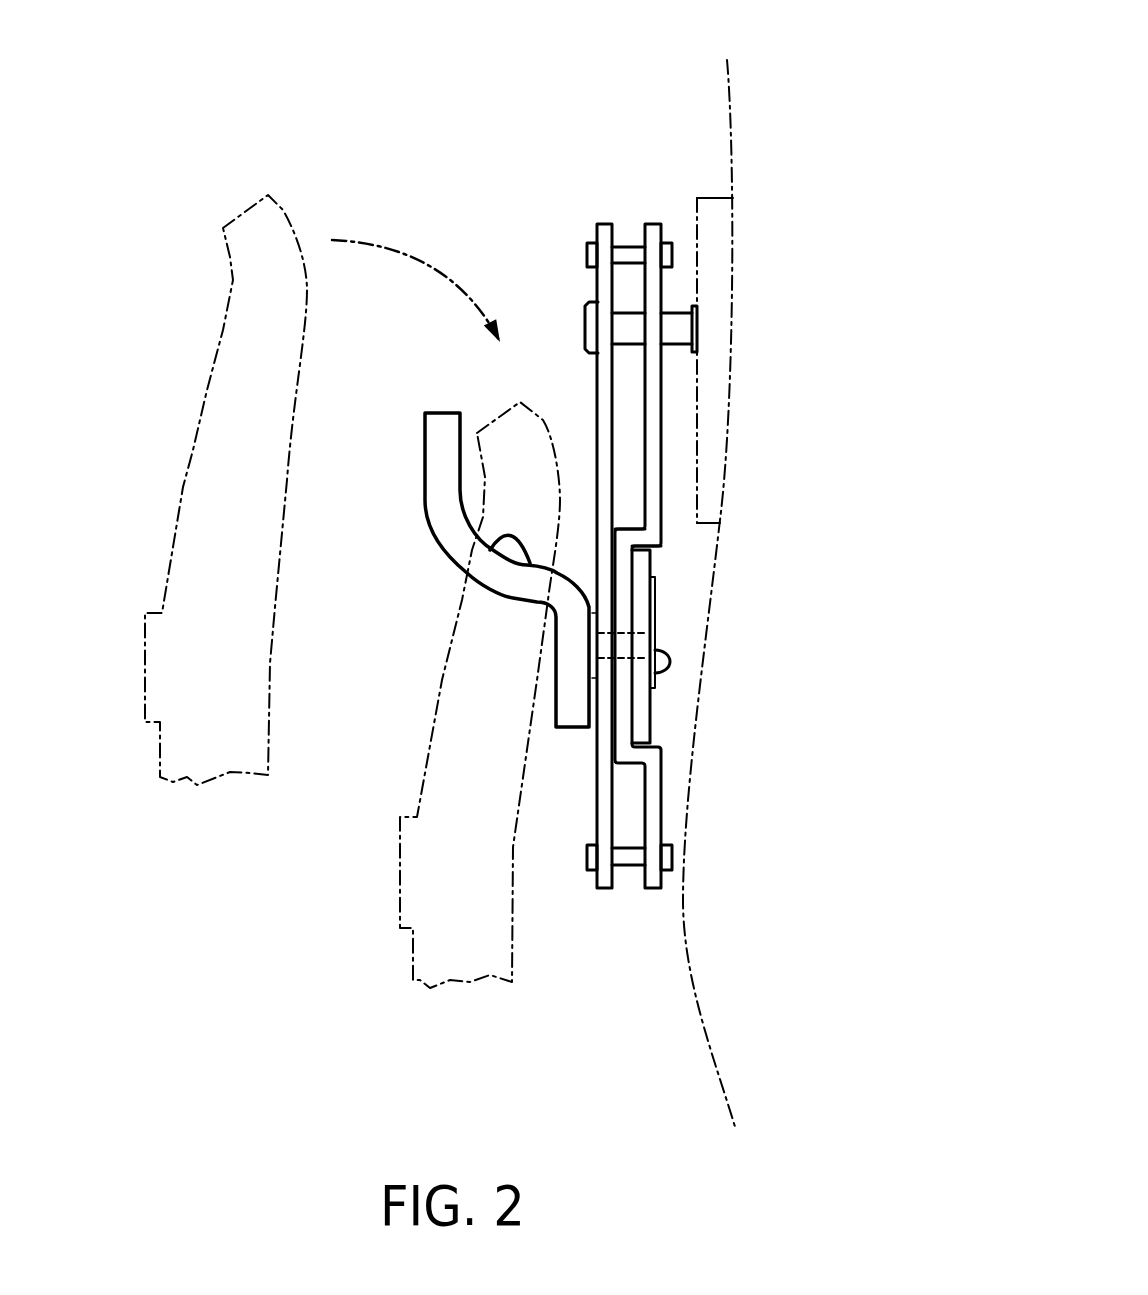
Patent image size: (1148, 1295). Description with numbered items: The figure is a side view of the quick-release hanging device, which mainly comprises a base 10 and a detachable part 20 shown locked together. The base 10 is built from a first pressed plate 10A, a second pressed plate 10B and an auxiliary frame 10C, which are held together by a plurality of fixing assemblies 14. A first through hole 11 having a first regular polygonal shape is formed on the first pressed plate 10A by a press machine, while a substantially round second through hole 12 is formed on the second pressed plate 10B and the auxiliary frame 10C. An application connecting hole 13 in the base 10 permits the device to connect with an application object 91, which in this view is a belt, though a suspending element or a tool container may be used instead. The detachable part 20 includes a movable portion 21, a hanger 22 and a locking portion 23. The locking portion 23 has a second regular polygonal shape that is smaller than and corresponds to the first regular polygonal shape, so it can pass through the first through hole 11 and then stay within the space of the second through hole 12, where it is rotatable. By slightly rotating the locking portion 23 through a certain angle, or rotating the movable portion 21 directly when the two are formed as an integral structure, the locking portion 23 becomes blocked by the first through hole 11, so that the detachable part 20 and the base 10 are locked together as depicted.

The base 10 is at (681, 502).
The first pressed plate 10A is at (607, 232).
The second pressed plate 10B is at (623, 530).
The auxiliary frame 10C is at (642, 703).
The first through hole 11 is at (610, 633).
The second through hole 12 is at (620, 633).
The application connecting hole 13 is at (606, 313).
The fixing assemblies 14 is at (628, 247).
The detachable part 20 is at (454, 690).
The movable portion 21 is at (567, 697).
The hanger 22 is at (557, 703).
The locking portion 23 is at (668, 668).
The application object 91 is at (713, 198).